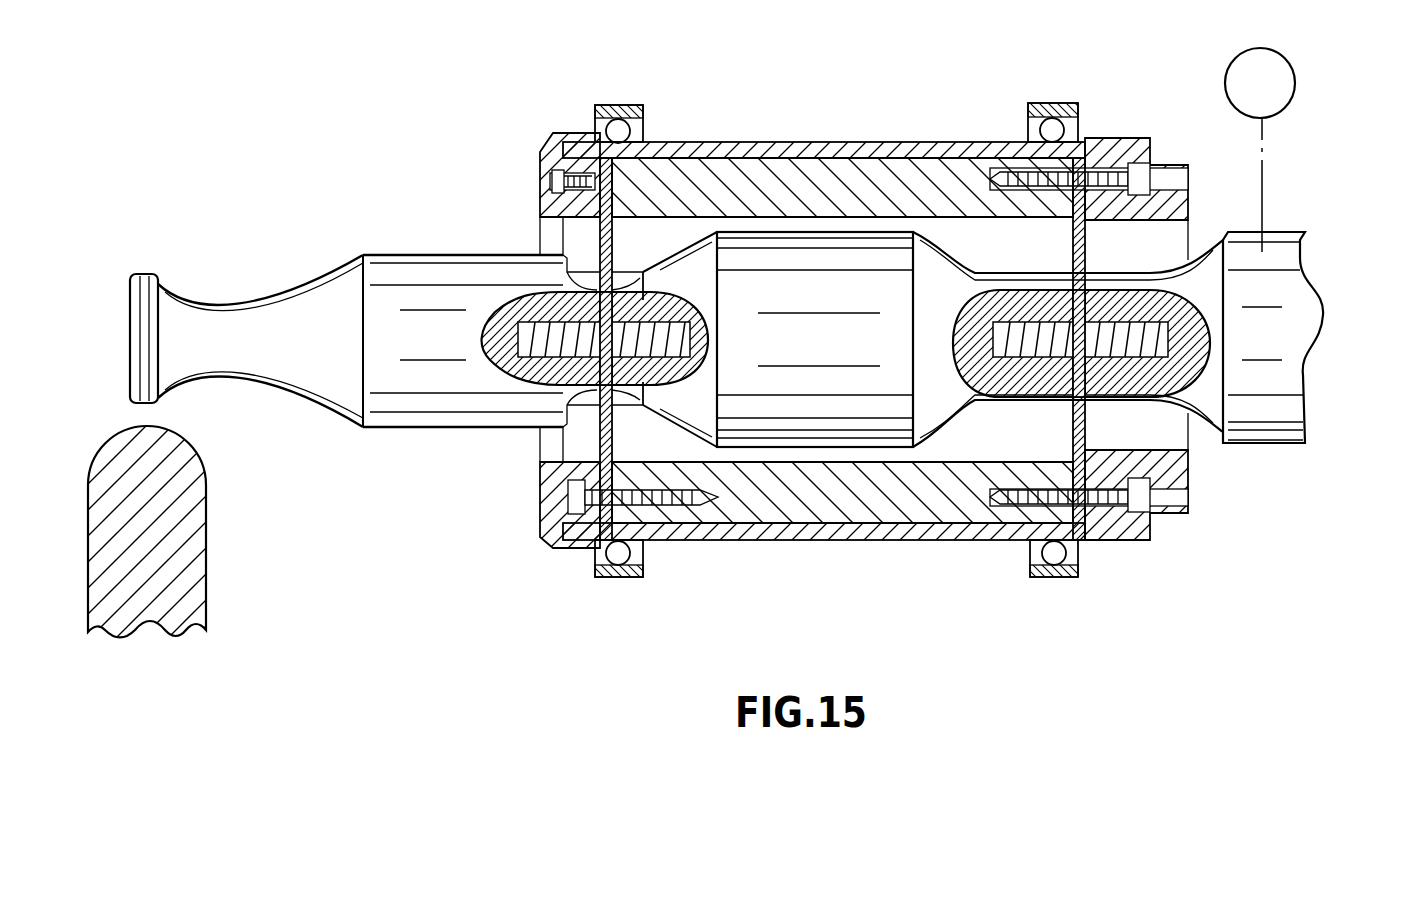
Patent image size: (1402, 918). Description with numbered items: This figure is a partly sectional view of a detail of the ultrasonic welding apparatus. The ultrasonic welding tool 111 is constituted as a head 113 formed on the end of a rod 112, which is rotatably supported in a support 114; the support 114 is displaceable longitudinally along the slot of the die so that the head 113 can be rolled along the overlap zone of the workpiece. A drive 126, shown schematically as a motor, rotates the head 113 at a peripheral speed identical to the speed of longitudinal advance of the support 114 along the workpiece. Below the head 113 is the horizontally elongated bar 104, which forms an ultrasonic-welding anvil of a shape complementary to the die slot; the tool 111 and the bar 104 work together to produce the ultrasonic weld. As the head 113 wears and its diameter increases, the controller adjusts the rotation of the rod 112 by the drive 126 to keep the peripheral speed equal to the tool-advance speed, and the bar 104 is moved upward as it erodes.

The bar 104 is at (176, 536).
The ultrasonic welding tool 111 is at (572, 636).
The rod 112 is at (453, 212).
The head 113 is at (143, 285).
The support 114 is at (795, 153).
The drive 126 is at (1296, 87).